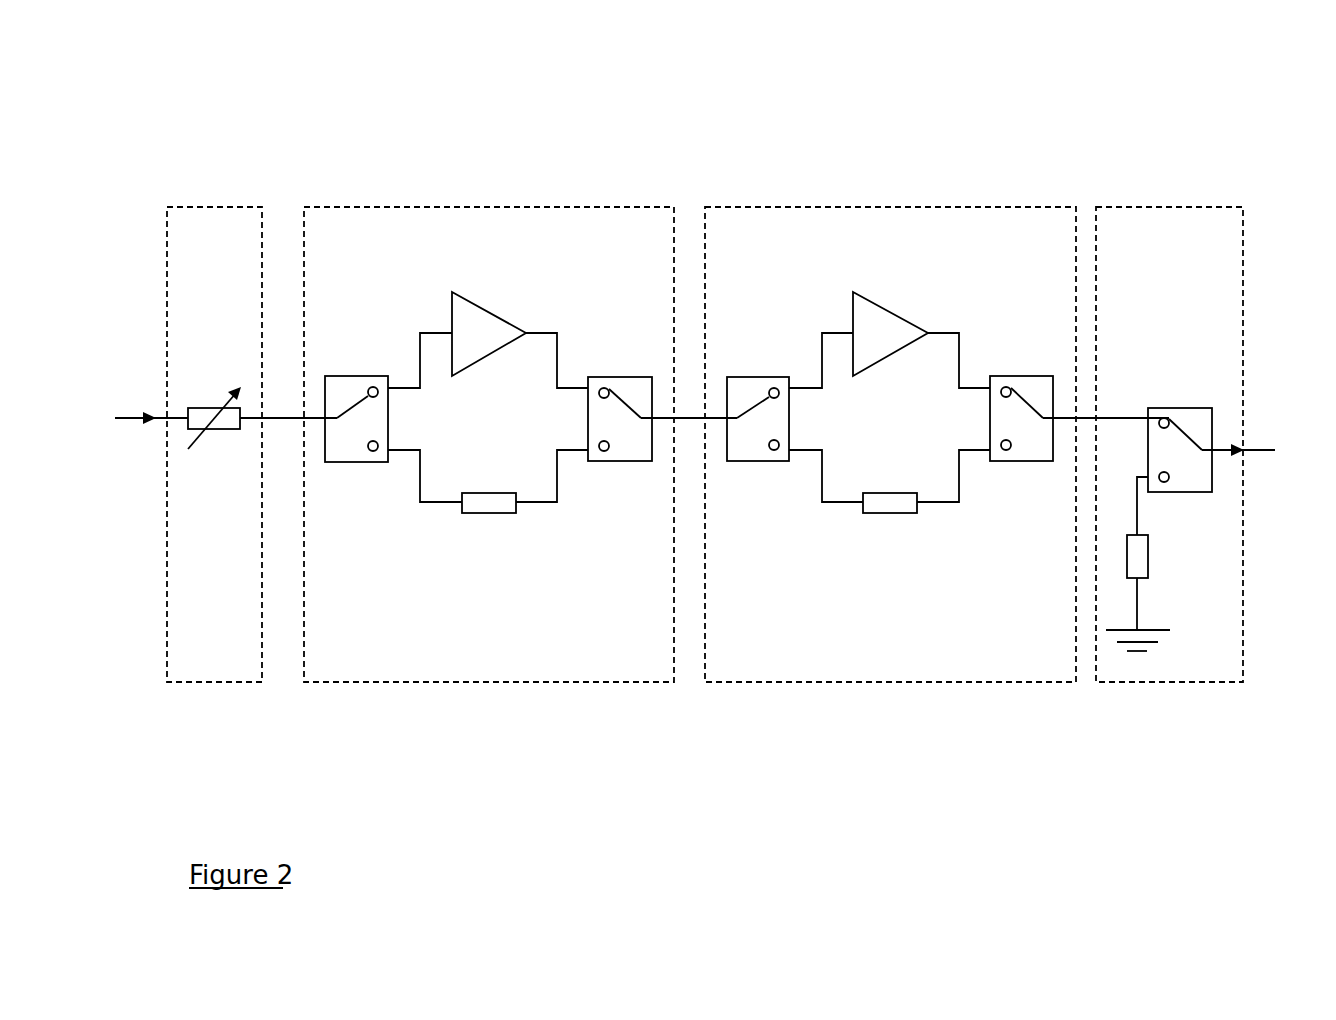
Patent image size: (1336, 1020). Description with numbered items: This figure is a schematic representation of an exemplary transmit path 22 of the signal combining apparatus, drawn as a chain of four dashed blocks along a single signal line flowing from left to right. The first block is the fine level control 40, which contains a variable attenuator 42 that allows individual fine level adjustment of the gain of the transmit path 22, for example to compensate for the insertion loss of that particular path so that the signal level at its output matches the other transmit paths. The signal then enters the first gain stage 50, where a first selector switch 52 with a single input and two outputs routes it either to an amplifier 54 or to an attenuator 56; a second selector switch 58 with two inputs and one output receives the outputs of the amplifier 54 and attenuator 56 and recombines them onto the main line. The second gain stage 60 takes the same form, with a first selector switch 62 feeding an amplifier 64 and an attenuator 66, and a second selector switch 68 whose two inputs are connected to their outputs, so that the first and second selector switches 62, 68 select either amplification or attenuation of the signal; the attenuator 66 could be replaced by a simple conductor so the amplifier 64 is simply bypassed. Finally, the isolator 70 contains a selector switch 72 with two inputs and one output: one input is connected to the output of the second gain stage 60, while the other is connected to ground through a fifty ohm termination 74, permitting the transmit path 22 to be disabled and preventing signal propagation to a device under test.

The transmit path 22 is at (195, 96).
The fine level control 40 is at (190, 684).
The variable attenuator 42 is at (230, 421).
The first gain stage 50 is at (327, 684).
The first selector switch 52 is at (345, 452).
The amplifier 54 is at (472, 356).
The attenuator 56 is at (472, 505).
The second selector switch 58 is at (642, 452).
The second gain stage 60 is at (727, 684).
The first selector switch 62 is at (747, 452).
The amplifier 64 is at (873, 356).
The attenuator 66 is at (874, 505).
The second selector switch 68 is at (1042, 452).
The isolator 70 is at (1117, 684).
The selector switch 72 is at (1200, 484).
The 50 ohm termination 74 is at (1138, 567).